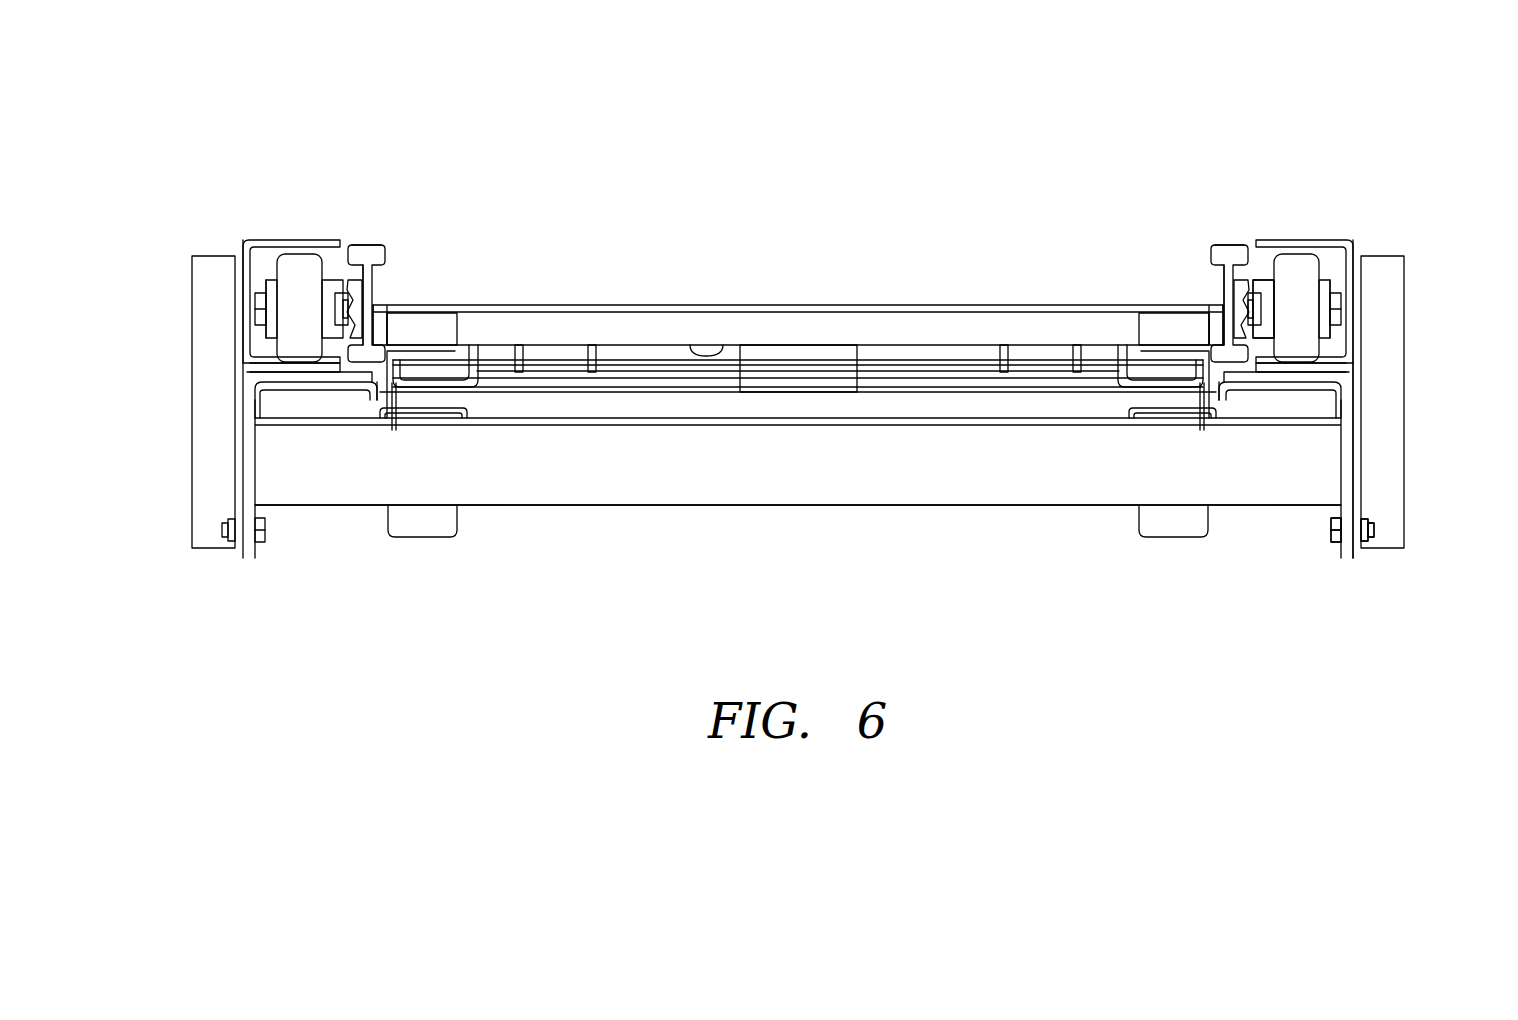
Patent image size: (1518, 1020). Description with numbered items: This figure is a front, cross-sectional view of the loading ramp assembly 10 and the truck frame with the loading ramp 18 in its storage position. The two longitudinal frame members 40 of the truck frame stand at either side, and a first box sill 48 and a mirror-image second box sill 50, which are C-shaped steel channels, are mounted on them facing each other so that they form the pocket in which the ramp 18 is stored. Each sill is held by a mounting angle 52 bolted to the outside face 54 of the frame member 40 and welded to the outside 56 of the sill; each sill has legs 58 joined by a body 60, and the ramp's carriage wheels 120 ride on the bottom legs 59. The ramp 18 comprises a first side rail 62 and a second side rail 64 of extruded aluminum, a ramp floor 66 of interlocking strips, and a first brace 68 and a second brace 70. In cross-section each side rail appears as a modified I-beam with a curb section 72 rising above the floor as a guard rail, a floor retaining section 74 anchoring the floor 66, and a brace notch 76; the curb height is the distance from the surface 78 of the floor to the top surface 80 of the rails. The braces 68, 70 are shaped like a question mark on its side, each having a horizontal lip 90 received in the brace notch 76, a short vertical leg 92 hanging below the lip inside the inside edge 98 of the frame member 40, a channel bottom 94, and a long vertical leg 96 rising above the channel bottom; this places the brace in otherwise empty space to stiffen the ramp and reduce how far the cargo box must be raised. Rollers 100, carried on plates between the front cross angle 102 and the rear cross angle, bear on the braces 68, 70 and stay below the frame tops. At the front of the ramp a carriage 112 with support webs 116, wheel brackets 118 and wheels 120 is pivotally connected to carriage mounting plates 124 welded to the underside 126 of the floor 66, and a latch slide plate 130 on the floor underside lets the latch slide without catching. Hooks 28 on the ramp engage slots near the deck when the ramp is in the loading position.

The loading ramp assembly 10 is at (803, 195).
The loading ramp 18 is at (610, 312).
The hooks 28 is at (447, 340).
The frame members 40 is at (248, 488).
The first box sill 48 is at (1357, 275).
The second box sill 50 is at (248, 257).
The mounting angles 52 is at (205, 303).
The outside face 54 is at (243, 557).
The outside 56 is at (242, 278).
The legs 58 is at (287, 254).
The bottom legs 59 is at (285, 366).
The body 60 is at (243, 328).
The first side rail 62 is at (1223, 290).
The second side rail 64 is at (370, 253).
The ramp floor 66 is at (850, 312).
The first brace 68 is at (393, 405).
The second brace 70 is at (1125, 378).
The curb section 72 is at (371, 290).
The floor retaining section 74 is at (441, 310).
The brace notch 76 is at (378, 397).
The surface 78 is at (787, 308).
The top surface 80 is at (363, 245).
The horizontal lip 90 is at (452, 312).
The short vertical leg 92 is at (385, 353).
The channel bottom 94 is at (480, 367).
The long vertical leg 96 is at (432, 382).
The inside edges 98 is at (377, 392).
The rollers 100 is at (420, 537).
The front cross angle 102 is at (680, 492).
The carriage 112 is at (1257, 287).
The support webs 116 is at (1343, 556).
The wheel brackets 118 is at (324, 290).
The wheels 120 is at (292, 268).
The carriage mounting plates 124 is at (520, 357).
The underside 126 is at (722, 343).
The latch slide plate 130 is at (808, 377).